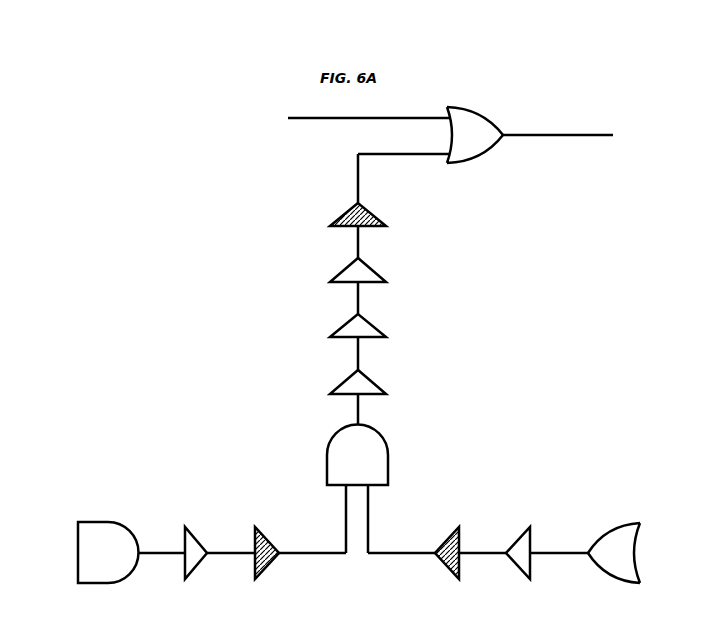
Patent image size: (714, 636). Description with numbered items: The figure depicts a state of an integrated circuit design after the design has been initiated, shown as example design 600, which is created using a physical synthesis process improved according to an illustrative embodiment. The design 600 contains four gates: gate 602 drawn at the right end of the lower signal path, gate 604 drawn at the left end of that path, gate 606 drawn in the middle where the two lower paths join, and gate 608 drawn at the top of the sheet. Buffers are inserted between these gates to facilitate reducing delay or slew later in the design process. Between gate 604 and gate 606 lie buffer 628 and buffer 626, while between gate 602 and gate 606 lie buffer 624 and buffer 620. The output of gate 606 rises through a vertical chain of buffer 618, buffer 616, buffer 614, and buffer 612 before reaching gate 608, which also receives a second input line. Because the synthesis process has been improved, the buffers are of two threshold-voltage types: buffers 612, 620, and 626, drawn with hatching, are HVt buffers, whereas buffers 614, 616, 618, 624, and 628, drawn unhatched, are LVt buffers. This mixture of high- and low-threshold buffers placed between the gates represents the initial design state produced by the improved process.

The design 600 is at (114, 209).
The gate 602 is at (585, 553).
The gate 604 is at (131, 552).
The gate 606 is at (357, 488).
The gate 608 is at (450, 155).
The HVt buffer 612 is at (341, 230).
The LVt buffer 614 is at (341, 286).
The LVt buffer 616 is at (341, 342).
The LVt buffer 618 is at (341, 397).
The HVt buffer 620 is at (418, 542).
The LVt buffer 624 is at (499, 542).
The HVt buffer 626 is at (297, 542).
The LVt buffer 628 is at (215, 542).